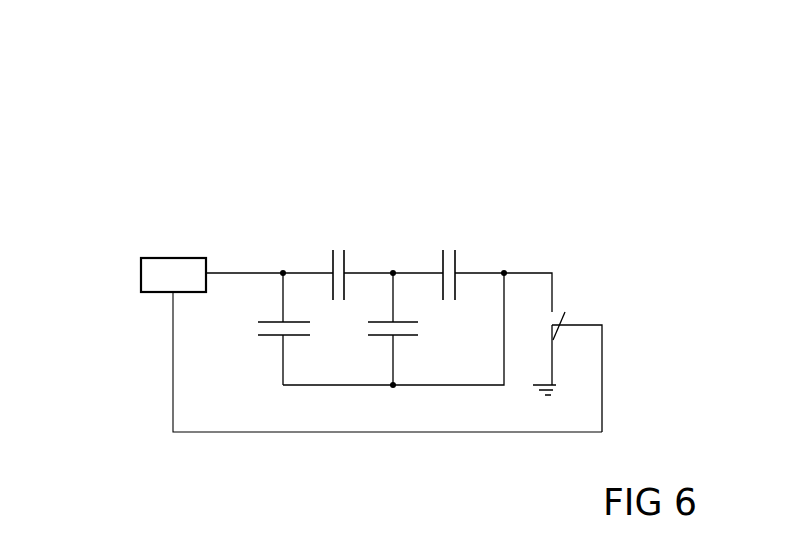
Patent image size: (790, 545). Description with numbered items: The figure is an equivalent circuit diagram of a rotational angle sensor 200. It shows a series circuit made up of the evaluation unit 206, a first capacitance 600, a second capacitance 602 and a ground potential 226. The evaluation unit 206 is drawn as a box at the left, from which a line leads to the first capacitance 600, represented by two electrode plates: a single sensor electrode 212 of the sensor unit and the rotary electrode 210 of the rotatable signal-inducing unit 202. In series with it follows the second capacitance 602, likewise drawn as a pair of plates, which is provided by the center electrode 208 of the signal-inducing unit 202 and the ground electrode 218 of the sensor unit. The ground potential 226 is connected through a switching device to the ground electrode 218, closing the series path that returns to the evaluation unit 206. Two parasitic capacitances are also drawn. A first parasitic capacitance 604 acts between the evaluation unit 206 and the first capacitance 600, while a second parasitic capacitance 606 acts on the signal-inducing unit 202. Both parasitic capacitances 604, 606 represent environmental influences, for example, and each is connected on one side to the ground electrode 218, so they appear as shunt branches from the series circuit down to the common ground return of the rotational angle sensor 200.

The rotational angle sensor 200 is at (220, 164).
The signal-inducing unit 202 is at (402, 173).
The evaluation unit 206 is at (140, 258).
The center electrode 208 is at (442, 255).
The rotary electrode 210 is at (373, 251).
The sensor electrode 212 is at (330, 257).
The ground electrode 218 is at (460, 253).
The ground potential 226 is at (558, 390).
The first capacitance 600 is at (330, 211).
The second capacitance 602 is at (460, 211).
The first parasitic capacitance 604 is at (273, 343).
The second parasitic capacitance 606 is at (396, 337).